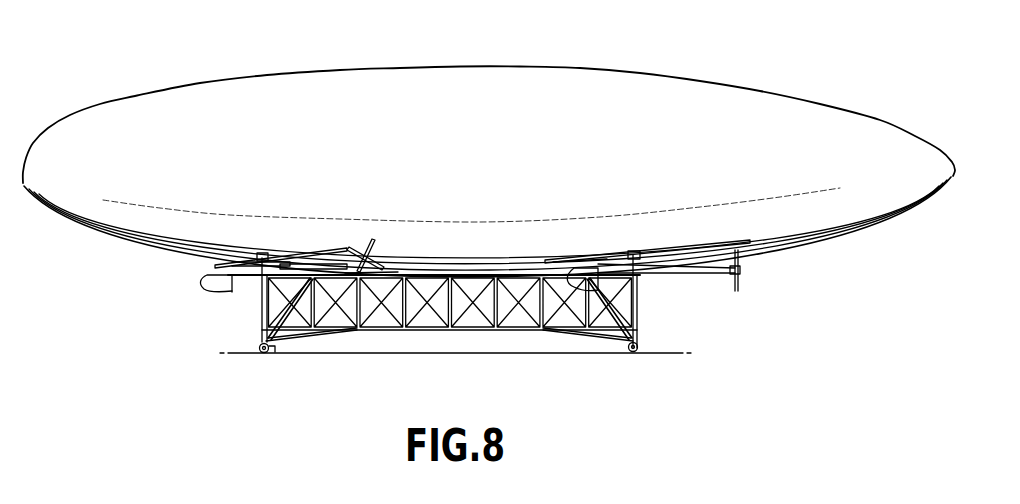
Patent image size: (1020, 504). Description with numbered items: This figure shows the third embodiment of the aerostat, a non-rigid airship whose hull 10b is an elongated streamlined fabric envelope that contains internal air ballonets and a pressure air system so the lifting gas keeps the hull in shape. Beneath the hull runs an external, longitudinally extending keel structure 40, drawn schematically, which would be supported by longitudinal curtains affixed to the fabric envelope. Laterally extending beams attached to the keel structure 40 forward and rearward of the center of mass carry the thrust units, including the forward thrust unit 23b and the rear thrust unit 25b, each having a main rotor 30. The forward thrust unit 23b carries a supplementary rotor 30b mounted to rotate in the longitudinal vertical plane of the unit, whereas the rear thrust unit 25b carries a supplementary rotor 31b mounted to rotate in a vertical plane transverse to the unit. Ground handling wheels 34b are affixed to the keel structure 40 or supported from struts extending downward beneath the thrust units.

The hull 10b is at (520, 68).
The thrust unit rotor 30 is at (331, 251).
The supplementary rotor 30b is at (377, 248).
The forward thrust unit 23b is at (238, 296).
The rear thrust unit 25b is at (649, 292).
The supplementary rotor 31b is at (742, 262).
The ground handling wheels 34b is at (278, 353).
The keel structure 40 is at (407, 330).